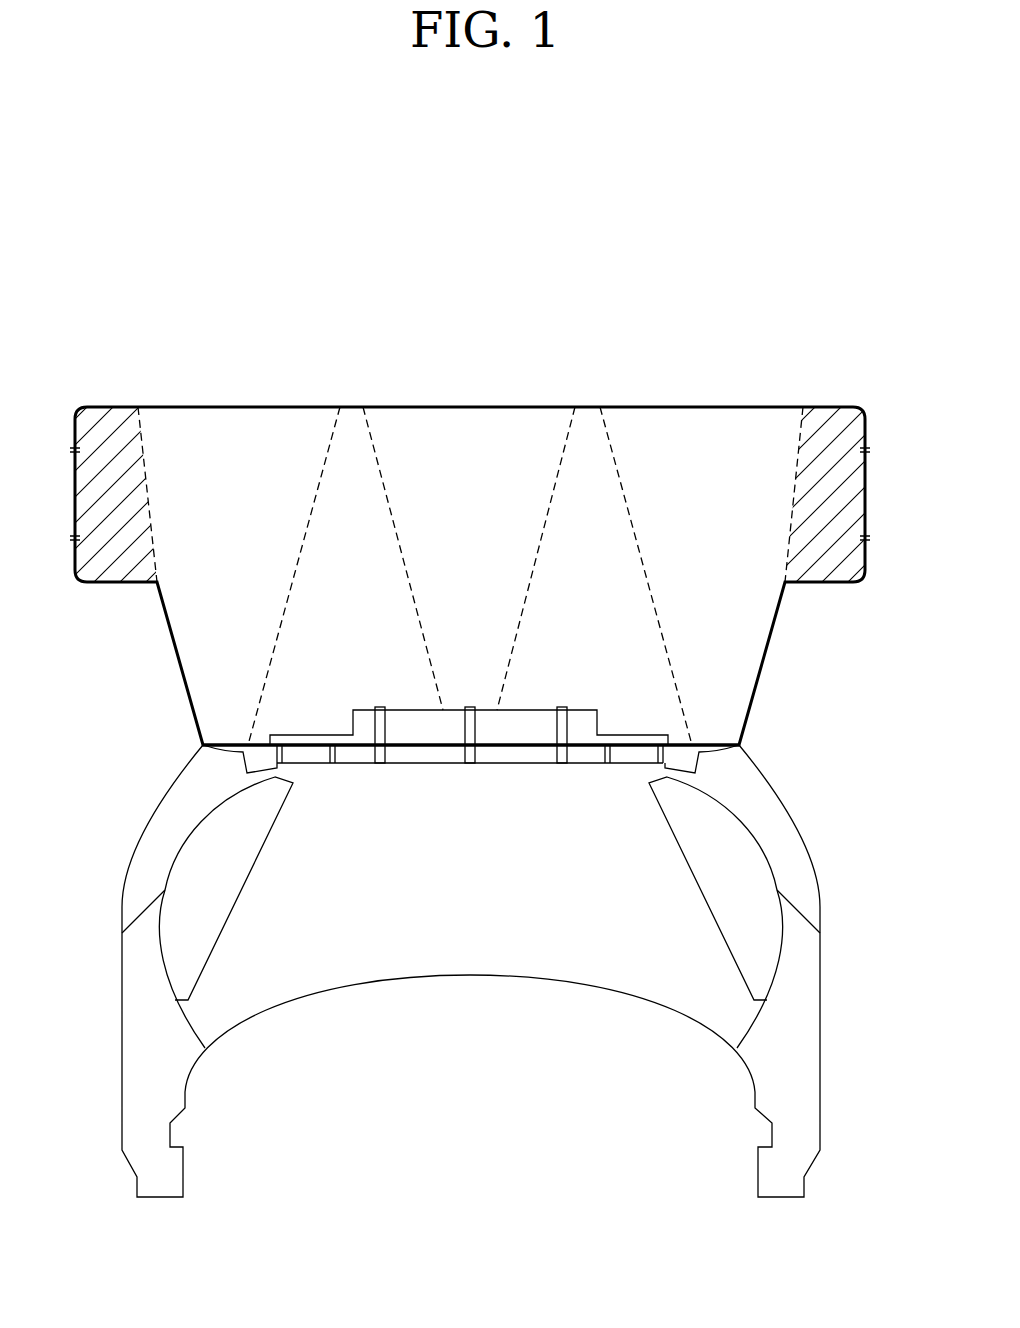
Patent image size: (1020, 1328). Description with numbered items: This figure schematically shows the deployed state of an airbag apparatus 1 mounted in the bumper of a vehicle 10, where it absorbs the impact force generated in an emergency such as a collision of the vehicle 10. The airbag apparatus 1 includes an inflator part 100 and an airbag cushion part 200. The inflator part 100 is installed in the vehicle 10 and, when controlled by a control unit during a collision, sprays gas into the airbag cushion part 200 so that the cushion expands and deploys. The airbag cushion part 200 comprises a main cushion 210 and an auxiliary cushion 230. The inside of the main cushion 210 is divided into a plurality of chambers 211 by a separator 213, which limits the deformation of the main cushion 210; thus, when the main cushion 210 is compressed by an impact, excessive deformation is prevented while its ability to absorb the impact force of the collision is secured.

The airbag apparatus 1 is at (869, 372).
The vehicle 10 is at (130, 797).
The inflator part 100 is at (603, 722).
The airbag cushion part 200 is at (772, 253).
The main cushion 210 is at (592, 300).
The chambers 211 is at (360, 560).
The separator 213 is at (328, 457).
The auxiliary cushion 230 is at (828, 407).